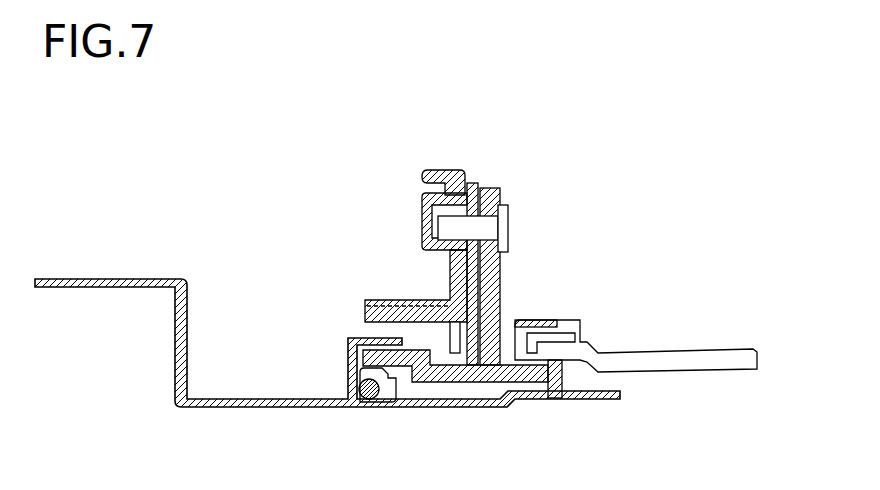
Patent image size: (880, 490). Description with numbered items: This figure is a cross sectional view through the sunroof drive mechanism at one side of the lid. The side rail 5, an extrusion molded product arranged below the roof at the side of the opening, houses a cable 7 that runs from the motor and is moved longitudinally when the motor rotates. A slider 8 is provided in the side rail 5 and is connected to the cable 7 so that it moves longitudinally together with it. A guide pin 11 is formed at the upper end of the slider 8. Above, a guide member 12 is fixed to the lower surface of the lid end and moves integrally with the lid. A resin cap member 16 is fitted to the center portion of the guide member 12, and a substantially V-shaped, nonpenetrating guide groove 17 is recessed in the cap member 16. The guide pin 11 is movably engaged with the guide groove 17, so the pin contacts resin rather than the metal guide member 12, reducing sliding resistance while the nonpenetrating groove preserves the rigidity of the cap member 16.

The side rail 5 is at (248, 410).
The cable 7 is at (373, 407).
The slider 8 is at (500, 288).
The guide pin 11 is at (488, 227).
The guide member 12 is at (445, 170).
The cap member 16 is at (468, 183).
The guide groove 17 is at (440, 230).